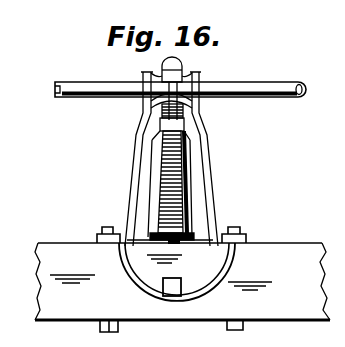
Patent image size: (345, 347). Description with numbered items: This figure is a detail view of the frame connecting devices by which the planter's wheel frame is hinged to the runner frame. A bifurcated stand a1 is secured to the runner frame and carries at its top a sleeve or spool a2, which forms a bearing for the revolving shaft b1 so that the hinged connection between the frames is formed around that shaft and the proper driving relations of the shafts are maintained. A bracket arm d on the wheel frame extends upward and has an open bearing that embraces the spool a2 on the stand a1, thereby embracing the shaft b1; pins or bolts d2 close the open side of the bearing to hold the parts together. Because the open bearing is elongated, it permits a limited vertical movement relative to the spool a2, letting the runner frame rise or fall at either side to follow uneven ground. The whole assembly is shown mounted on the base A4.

The base plate A4 is at (182, 279).
The bifurcated stand a1 is at (205, 170).
The sleeve or spool a2 is at (201, 72).
The revolving shaft b1 is at (180, 76).
The pins or bolts d2 is at (165, 108).
The bracket arms d is at (180, 202).